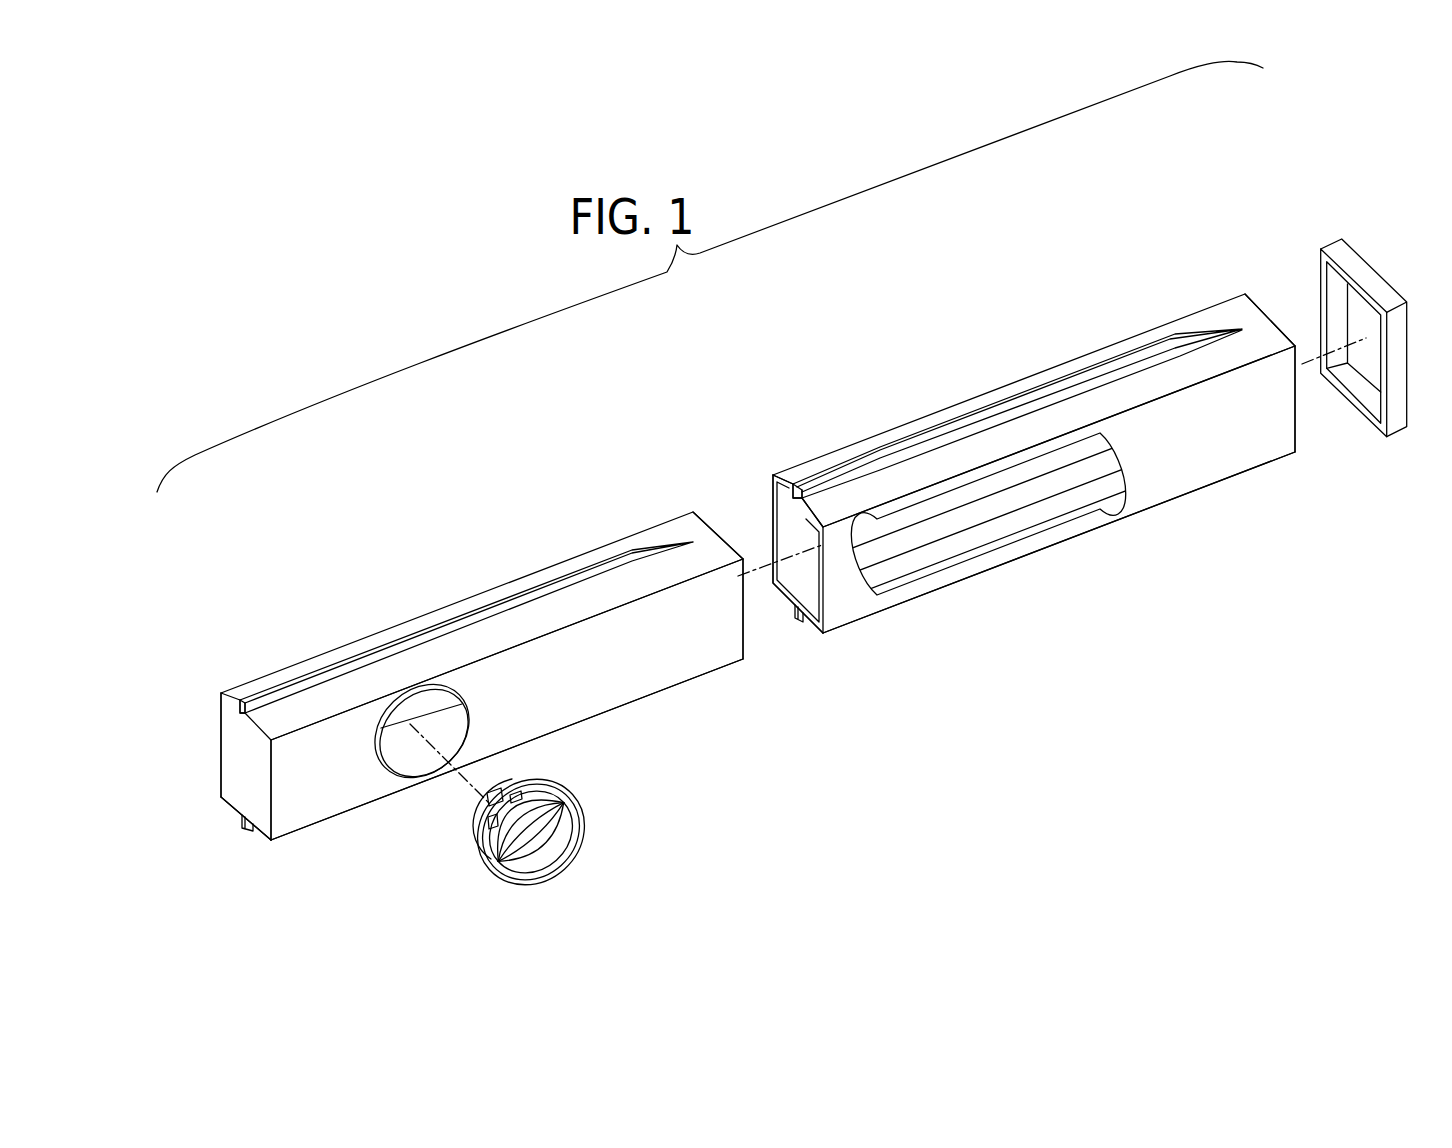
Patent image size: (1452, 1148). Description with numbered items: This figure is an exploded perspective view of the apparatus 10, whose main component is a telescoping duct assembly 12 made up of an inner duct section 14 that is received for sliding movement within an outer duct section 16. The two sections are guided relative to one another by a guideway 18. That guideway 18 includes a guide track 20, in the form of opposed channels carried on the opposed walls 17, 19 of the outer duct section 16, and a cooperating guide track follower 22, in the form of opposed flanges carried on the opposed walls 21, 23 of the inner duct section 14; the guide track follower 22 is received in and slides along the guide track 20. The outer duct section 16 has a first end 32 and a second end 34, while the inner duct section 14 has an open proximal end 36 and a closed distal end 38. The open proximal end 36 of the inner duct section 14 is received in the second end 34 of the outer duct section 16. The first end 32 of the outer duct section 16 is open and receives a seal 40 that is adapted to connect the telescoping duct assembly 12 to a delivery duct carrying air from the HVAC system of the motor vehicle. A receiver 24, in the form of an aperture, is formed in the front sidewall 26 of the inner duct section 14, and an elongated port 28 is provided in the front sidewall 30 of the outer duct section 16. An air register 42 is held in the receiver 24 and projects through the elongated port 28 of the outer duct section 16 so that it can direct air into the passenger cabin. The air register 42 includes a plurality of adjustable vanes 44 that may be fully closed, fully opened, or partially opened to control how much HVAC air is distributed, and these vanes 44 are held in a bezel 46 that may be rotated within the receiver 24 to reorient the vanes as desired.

The apparatus 10 is at (546, 428).
The telescoping duct assembly 12 is at (734, 726).
The inner duct section 14 is at (434, 672).
The outer duct section 16 is at (1021, 460).
The opposed wall (of outer duct section) 17 is at (1118, 340).
The guideway 18 is at (616, 514).
The opposed wall (of outer duct section) 19 is at (782, 598).
The guide track 20 is at (932, 432).
The opposed wall (of inner duct section) 21 is at (505, 580).
The guide track follower 22 is at (340, 660).
The opposed wall (of inner duct section) 23 is at (232, 807).
The receiver 24 is at (382, 770).
The front sidewall (of inner duct section) 26 is at (596, 695).
The elongated port 28 is at (1086, 525).
The front sidewall (of outer duct section) 30 is at (1205, 473).
The first end 32 is at (1260, 292).
The second end 34 is at (781, 511).
The open proximal end 36 is at (712, 522).
The closed distal end 38 is at (231, 748).
The seal 40 is at (1400, 402).
The air register 42 is at (552, 849).
The adjustable vanes 44 is at (497, 858).
The bezel 46 is at (578, 855).